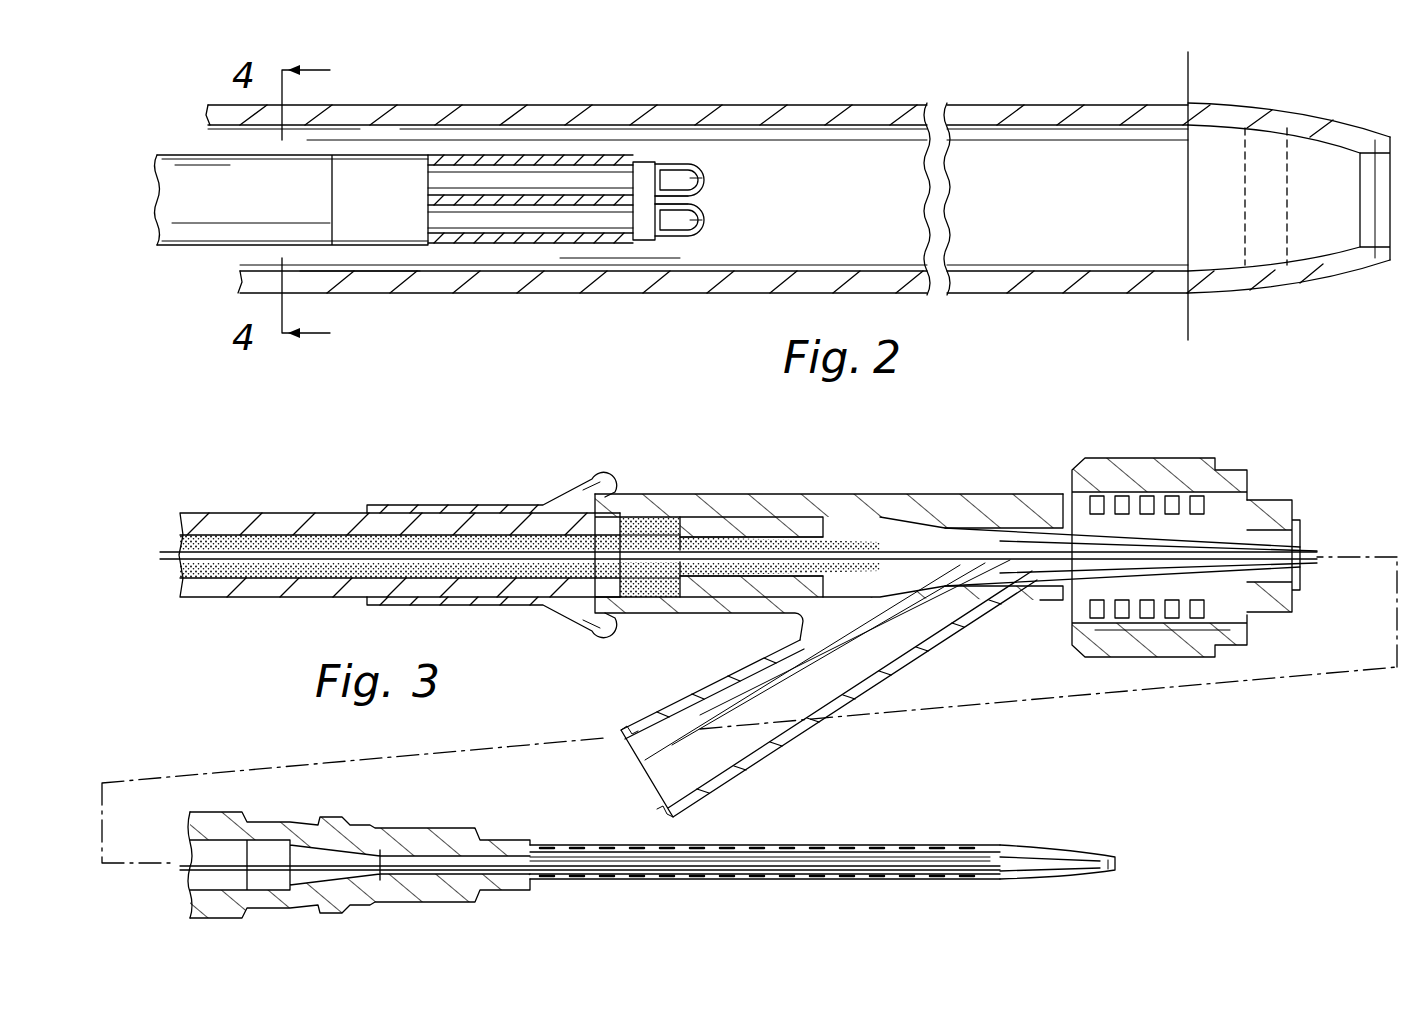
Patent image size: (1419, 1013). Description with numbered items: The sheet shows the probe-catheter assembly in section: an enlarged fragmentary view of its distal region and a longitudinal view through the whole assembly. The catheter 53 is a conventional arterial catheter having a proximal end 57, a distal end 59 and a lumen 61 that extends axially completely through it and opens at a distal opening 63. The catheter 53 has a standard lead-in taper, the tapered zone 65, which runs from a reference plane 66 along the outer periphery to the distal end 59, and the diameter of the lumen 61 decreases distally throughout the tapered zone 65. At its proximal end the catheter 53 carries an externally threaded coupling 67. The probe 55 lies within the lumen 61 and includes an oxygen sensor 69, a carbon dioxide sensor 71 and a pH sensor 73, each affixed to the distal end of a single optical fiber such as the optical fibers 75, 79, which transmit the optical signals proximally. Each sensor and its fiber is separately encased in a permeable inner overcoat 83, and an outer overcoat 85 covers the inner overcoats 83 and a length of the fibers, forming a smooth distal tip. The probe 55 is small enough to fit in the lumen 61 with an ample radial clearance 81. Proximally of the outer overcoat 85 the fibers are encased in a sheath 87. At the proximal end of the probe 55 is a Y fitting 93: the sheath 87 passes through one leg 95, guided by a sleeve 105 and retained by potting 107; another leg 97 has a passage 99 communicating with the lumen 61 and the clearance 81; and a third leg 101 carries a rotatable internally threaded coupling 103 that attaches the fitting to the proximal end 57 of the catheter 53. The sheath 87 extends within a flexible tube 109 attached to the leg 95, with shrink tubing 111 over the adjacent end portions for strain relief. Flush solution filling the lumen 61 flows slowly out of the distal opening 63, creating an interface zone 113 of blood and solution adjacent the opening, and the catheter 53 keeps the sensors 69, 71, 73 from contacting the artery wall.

In FIG. 2, the catheter 53 is at (428, 103).
In FIG. 3, the catheter 53 is at (398, 826).
In FIG. 3, the probe 55 is at (925, 492).
In FIG. 3, the proximal end 57 is at (1190, 500).
In FIG. 2, the distal end 59 is at (1398, 140).
In FIG. 3, the distal end 59 is at (1118, 855).
In FIG. 2, the lumen 61 is at (622, 258).
In FIG. 3, the lumen 61 is at (368, 850).
In FIG. 2, the distal opening 63 is at (1393, 248).
In FIG. 3, the distal opening 63 is at (1120, 863).
In FIG. 2, the tapered zone 65 is at (1335, 275).
In FIG. 2, the reference plane 66 is at (1186, 82).
In FIG. 3, the externally threaded coupling 67 is at (1240, 492).
In FIG. 2, the oxygen sensor 69 is at (704, 165).
In FIG. 2, the carbon dioxide sensor 71 is at (710, 196).
In FIG. 2, the pH sensor 73 is at (706, 212).
In FIG. 2, the optical fiber 75 is at (690, 170).
In FIG. 2, the optical fiber 79 is at (672, 245).
In FIG. 2, the radial clearance 81 is at (352, 258).
In FIG. 2, the inner overcoat 83 is at (704, 178).
In FIG. 2, the outer overcoat 85 is at (530, 238).
In FIG. 2, the sheath 87 is at (195, 232).
In FIG. 3, the sheath 87 is at (278, 562).
In FIG. 3, the Y fitting 93 is at (815, 512).
In FIG. 3, the leg 95 is at (885, 510).
In FIG. 3, the leg 97 is at (878, 680).
In FIG. 3, the passage 99 is at (738, 736).
In FIG. 3, the third leg 101 is at (1118, 478).
In FIG. 3, the rotatable internally threaded coupling 103 is at (1127, 648).
In FIG. 3, the sleeve 105 is at (963, 535).
In FIG. 3, the potting 107 is at (660, 520).
In FIG. 3, the flexible tube 109 is at (272, 520).
In FIG. 3, the shrink tubing 111 is at (398, 505).
In FIG. 2, the interface zone 113 is at (1268, 140).